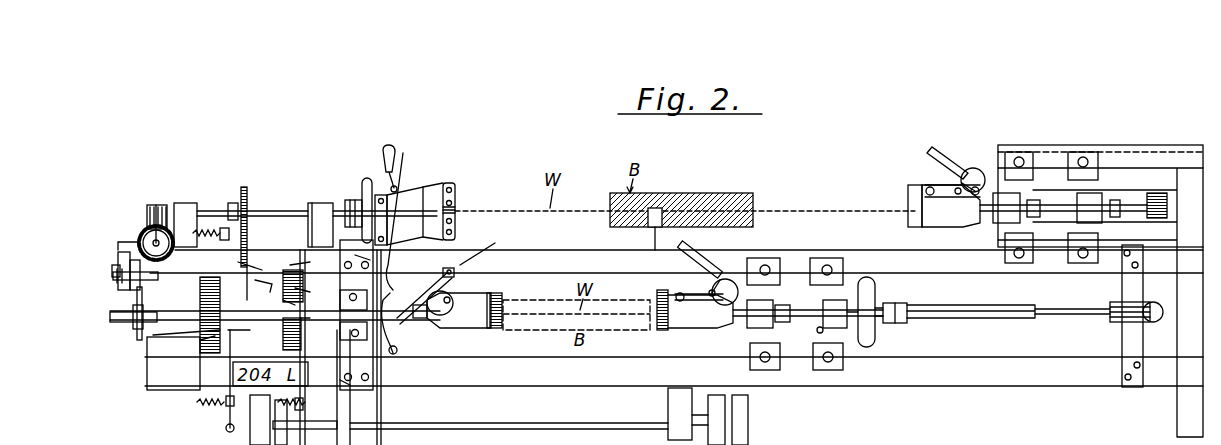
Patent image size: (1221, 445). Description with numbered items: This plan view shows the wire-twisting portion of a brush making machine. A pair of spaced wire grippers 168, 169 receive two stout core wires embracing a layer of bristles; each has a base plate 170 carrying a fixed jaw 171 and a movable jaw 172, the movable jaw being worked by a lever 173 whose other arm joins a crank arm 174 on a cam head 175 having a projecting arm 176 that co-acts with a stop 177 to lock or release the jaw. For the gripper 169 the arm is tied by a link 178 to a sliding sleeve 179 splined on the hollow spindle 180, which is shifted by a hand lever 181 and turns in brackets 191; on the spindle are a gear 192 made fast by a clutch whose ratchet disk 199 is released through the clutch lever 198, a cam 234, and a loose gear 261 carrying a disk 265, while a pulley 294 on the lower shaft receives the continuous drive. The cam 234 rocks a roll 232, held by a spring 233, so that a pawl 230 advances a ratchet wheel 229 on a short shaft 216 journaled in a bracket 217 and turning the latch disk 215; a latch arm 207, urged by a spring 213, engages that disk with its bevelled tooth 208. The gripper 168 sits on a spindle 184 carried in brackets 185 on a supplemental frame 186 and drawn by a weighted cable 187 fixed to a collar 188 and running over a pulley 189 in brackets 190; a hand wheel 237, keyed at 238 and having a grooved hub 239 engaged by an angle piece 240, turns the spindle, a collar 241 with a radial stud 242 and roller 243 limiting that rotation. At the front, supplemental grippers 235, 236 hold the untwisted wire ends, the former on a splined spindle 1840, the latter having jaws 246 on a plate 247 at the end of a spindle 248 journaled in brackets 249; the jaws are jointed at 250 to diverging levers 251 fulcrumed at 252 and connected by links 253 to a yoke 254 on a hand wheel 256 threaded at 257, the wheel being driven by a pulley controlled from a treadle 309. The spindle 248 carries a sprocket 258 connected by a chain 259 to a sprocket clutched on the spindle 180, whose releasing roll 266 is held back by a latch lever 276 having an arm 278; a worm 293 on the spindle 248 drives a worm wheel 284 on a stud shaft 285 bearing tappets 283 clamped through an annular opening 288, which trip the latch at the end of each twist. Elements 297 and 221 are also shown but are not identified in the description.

The worm 293 is at (156, 226).
The bevelled tooth portion 208 is at (186, 203).
The annular opening 288 is at (165, 212).
The stud shaft 285 is at (155, 205).
The longitudinal spindle 248 is at (207, 210).
The brackets 249 is at (209, 205).
The latch lever 276 is at (232, 203).
The sprocket 258 is at (247, 187).
The chain 259 is at (250, 200).
The outwardly projecting arm 278 is at (250, 270).
The roll 266 is at (265, 280).
The tappets 283 is at (140, 235).
The worm wheel 284 is at (150, 235).
The roll 232 is at (120, 255).
The spring-pressed pawl 230 is at (130, 265).
The bracket 217 is at (118, 265).
The ratchet wheel 229 is at (113, 278).
The short horizontal shaft 216 is at (113, 274).
The horizontal hollow spindle 180 is at (110, 316).
The cam 234 is at (137, 330).
The latch disk 215 is at (195, 335).
The gear 297 is at (205, 330).
The brackets 191 is at (153, 335).
The disk 265 is at (250, 335).
The pulley 294 is at (230, 398).
The gear 261 is at (200, 340).
The spring 233 is at (250, 415).
The links 253 is at (387, 150).
The treadle 309 is at (398, 160).
The hand wheel 256 is at (367, 178).
The threaded connection 257 is at (350, 200).
The latch arm 207 is at (300, 265).
The spring 213 is at (312, 203).
The ratchet disk 199 is at (300, 290).
The clutch lever 198 is at (285, 300).
The yoke 254 is at (360, 262).
The hand lever 181 is at (410, 215).
The diverging levers 251 is at (435, 190).
The plate 247 is at (455, 190).
The joint 250 is at (455, 200).
The complementary jaws 246 is at (455, 210).
The supplemental gripper 236 is at (464, 222).
The link 178 is at (420, 290).
The fulcrum 252 is at (450, 276).
The projecting arm 176 is at (450, 277).
The lever 173 is at (453, 297).
The movable jaw 172 is at (497, 295).
The wire gripper 169 is at (502, 300).
The base plate 170 is at (470, 330).
The fixed jaw 171 is at (500, 328).
The sliding sleeve 179 is at (427, 314).
The crank arm 174 is at (447, 305).
The cam head 175 is at (735, 290).
The stop 177 is at (440, 322).
The gear 221 is at (300, 320).
The gear 192 is at (345, 380).
The wire gripper 168 is at (660, 283).
The brackets 185 is at (790, 300).
The supplemental frame 186 is at (765, 258).
The angle piece 240 is at (833, 300).
The collar 241 is at (825, 310).
The radial stud 242 is at (810, 312).
The roller 243 is at (820, 333).
The hand wheel 237 is at (866, 280).
The grooved hub 239 is at (868, 347).
The key 238 is at (888, 300).
The collar 188 is at (895, 305).
The horizontal spindle 184 is at (980, 319).
The weighted cable 187 is at (1060, 314).
The pulley 189 is at (1110, 322).
The brackets 190 is at (1140, 388).
The supplemental gripper 235 is at (915, 185).
The spindle 1840 is at (1148, 193).